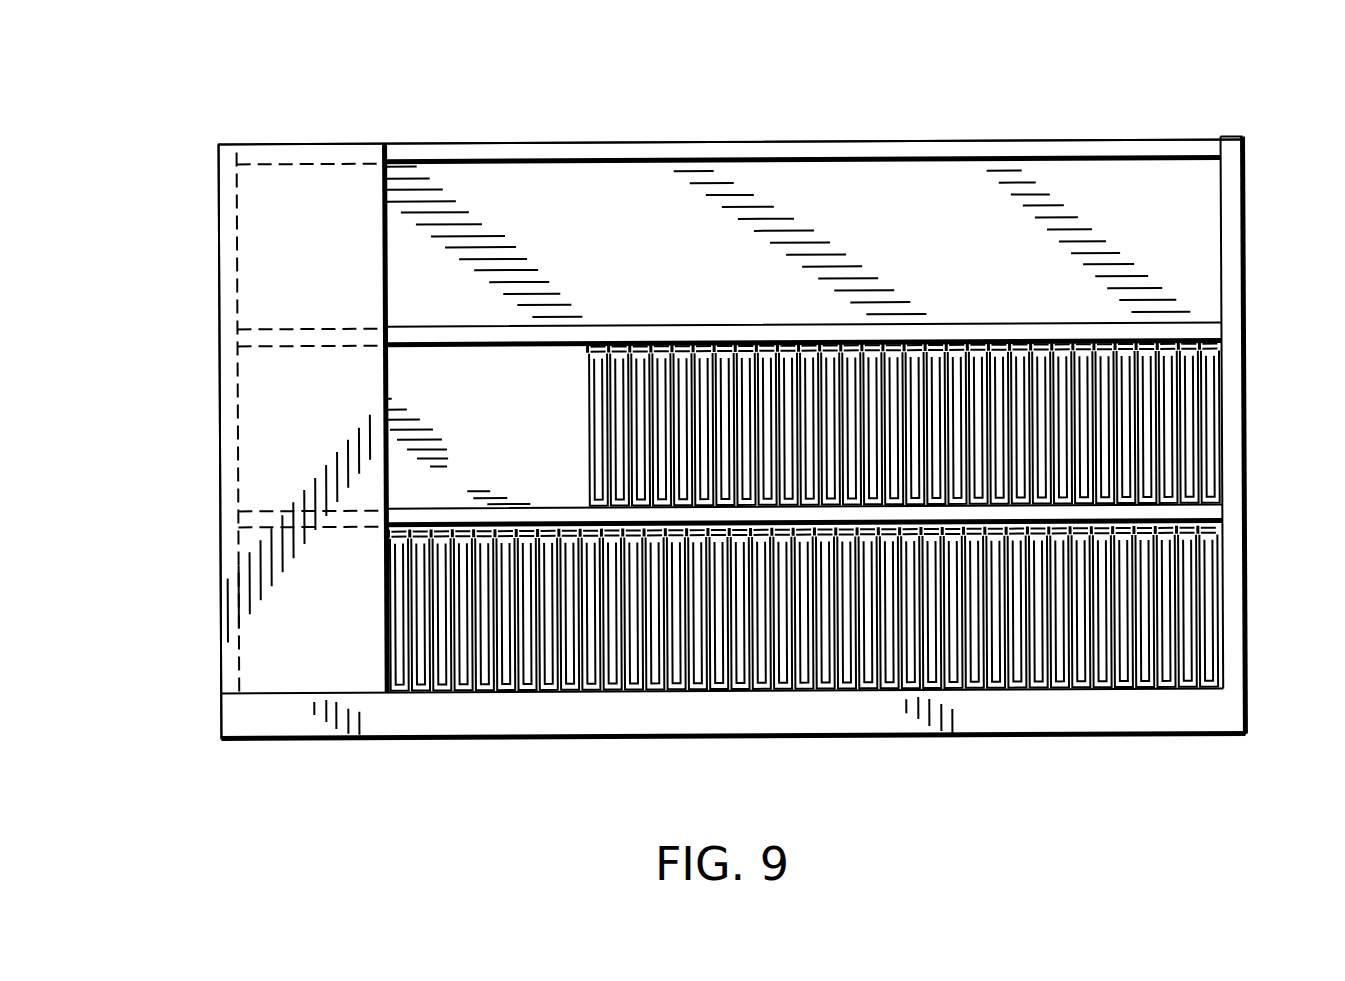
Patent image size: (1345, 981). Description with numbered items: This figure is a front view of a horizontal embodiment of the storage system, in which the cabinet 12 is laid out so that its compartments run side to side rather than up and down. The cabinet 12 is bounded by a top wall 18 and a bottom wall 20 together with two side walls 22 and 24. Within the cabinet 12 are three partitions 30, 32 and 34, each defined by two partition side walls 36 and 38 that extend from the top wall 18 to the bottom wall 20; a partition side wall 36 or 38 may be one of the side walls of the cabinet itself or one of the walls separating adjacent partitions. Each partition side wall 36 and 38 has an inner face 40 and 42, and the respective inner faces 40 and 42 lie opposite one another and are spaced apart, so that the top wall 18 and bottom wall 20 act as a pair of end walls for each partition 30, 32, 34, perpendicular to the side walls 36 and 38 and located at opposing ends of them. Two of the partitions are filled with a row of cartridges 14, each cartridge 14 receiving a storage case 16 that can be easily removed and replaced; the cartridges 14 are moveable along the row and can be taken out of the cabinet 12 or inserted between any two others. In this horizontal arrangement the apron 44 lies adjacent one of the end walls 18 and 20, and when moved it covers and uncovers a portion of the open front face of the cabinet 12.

The cabinet 12 is at (1062, 86).
The cartridge 14 is at (1167, 683).
The storage case 16 is at (1128, 683).
The top wall 18 is at (248, 232).
The bottom wall 20 is at (1222, 186).
The side wall 22 is at (622, 712).
The side wall 24 is at (822, 142).
The partition 30 is at (1175, 612).
The partition 32 is at (1188, 414).
The partition 34 is at (1185, 250).
The partition side wall 36 is at (614, 323).
The partition side wall 38 is at (540, 172).
The inner face 40 is at (460, 324).
The inner face 42 is at (496, 170).
The apron 44 is at (311, 178).